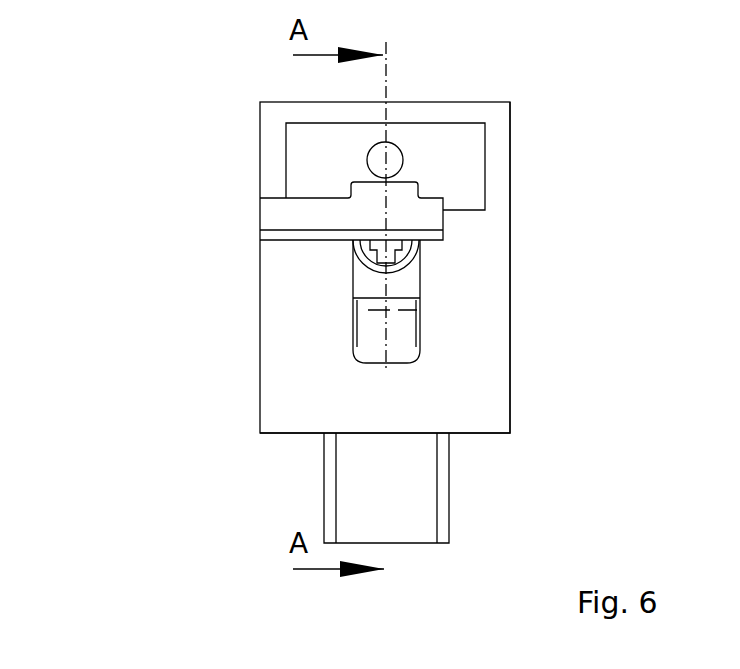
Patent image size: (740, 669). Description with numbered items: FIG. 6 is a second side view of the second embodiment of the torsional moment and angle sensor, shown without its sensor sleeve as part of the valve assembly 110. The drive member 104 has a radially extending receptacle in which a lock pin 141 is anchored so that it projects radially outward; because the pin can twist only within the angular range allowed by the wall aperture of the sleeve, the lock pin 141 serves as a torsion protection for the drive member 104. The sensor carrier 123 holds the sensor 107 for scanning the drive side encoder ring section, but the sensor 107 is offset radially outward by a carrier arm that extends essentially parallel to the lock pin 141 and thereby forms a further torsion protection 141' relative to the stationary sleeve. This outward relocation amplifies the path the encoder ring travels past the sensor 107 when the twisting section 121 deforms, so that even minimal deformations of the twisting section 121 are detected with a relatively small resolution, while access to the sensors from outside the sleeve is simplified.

The valve assembly 110 is at (258, 141).
The sensor carrier 123 is at (493, 358).
The torsion protection 141' is at (290, 209).
The lock pin 141 is at (469, 256).
The sensor 107 is at (380, 247).
The twisting section 121 is at (398, 333).
The drive member 104 is at (443, 483).